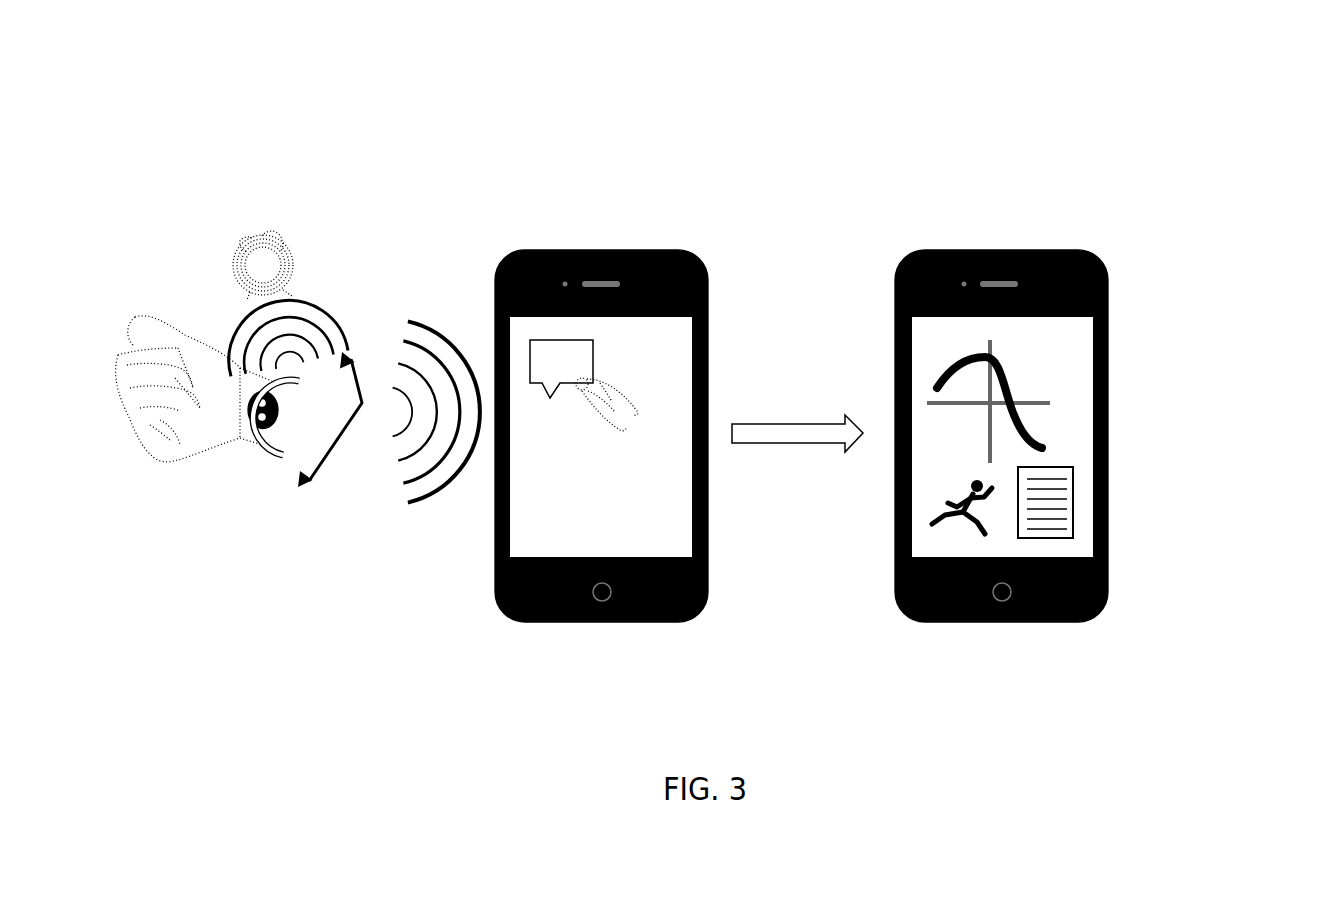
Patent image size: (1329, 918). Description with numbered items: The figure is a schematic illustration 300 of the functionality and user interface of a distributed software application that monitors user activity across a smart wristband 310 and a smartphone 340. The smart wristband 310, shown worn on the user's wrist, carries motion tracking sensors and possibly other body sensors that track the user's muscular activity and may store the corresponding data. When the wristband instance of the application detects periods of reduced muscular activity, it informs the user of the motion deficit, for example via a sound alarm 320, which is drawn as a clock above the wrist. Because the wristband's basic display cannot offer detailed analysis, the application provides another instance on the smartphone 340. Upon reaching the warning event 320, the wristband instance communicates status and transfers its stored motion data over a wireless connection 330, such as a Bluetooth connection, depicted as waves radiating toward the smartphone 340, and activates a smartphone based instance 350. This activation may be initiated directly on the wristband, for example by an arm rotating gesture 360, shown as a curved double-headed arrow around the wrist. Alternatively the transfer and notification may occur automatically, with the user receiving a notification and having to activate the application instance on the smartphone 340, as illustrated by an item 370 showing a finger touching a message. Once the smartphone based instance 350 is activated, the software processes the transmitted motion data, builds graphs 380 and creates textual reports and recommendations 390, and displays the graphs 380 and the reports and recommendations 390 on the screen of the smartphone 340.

The schematic illustration 300 is at (1291, 119).
The smart wristband 310 is at (250, 433).
The sound alarm / warning event 320 is at (300, 242).
The wireless connection 330 is at (383, 478).
The smartphone 340 is at (642, 399).
The smartphone based instance 350 is at (667, 346).
The arm rotating gesture 360 is at (362, 362).
The item illustrating activation of application instance 370 is at (577, 400).
The graphs 380 is at (1060, 423).
The textual reports and recommendations 390 is at (1080, 495).